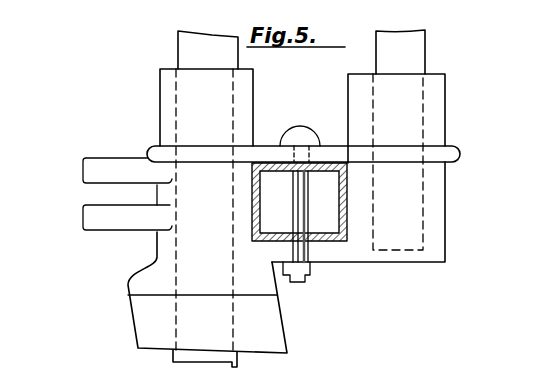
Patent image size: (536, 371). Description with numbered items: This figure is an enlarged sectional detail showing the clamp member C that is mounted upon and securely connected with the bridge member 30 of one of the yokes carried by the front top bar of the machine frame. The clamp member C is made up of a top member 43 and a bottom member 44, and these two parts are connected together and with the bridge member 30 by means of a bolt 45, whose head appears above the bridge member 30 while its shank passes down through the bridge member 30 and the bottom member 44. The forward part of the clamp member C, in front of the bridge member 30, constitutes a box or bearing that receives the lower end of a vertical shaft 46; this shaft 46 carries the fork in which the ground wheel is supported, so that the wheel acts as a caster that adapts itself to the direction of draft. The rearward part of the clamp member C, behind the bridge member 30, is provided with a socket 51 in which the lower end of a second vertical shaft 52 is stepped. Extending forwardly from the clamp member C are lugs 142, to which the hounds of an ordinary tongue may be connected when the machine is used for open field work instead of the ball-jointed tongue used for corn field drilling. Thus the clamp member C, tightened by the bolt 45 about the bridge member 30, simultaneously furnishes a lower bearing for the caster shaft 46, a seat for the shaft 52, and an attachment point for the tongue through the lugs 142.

The vertical shaft 46 is at (195, 48).
The vertical shaft 52 is at (415, 47).
The top member 43 is at (411, 118).
The socket 51 is at (425, 100).
The bottom member 44 is at (501, 247).
The clamp member C is at (310, 170).
The bolt 45 is at (296, 137).
The bridge member 30 is at (330, 240).
The lugs 142 is at (87, 213).